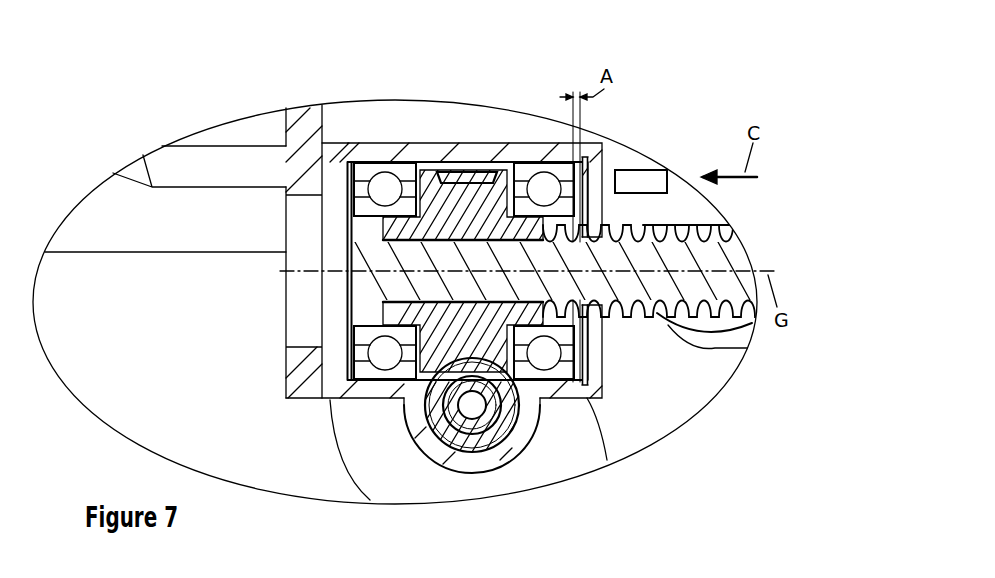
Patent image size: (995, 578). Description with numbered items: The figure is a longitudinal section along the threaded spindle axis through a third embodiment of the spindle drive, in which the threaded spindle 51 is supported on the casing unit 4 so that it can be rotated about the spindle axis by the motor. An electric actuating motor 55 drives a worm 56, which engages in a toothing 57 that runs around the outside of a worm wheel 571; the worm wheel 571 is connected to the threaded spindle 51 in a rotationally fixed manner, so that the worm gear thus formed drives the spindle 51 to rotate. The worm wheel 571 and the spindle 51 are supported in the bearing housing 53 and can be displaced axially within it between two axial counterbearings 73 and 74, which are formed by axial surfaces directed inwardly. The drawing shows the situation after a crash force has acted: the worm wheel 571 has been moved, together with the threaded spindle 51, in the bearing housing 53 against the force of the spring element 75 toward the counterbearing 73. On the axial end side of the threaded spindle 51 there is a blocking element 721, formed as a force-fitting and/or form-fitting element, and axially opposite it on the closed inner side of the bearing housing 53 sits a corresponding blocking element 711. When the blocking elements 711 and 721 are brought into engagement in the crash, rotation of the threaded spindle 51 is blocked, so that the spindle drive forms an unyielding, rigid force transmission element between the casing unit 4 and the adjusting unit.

The casing unit 4 is at (303, 127).
The blocking element 711 is at (345, 243).
The axial counterbearing 73 is at (343, 222).
The spring element 75 is at (340, 185).
The blocking element 721 is at (352, 281).
The bearing housing 53 is at (520, 153).
The toothing 57 is at (458, 172).
The worm wheel 571 is at (468, 185).
The axial counterbearing 74 is at (587, 172).
The threaded spindle 51 is at (728, 260).
The actuating motor 55 is at (585, 428).
The worm 56 is at (513, 420).